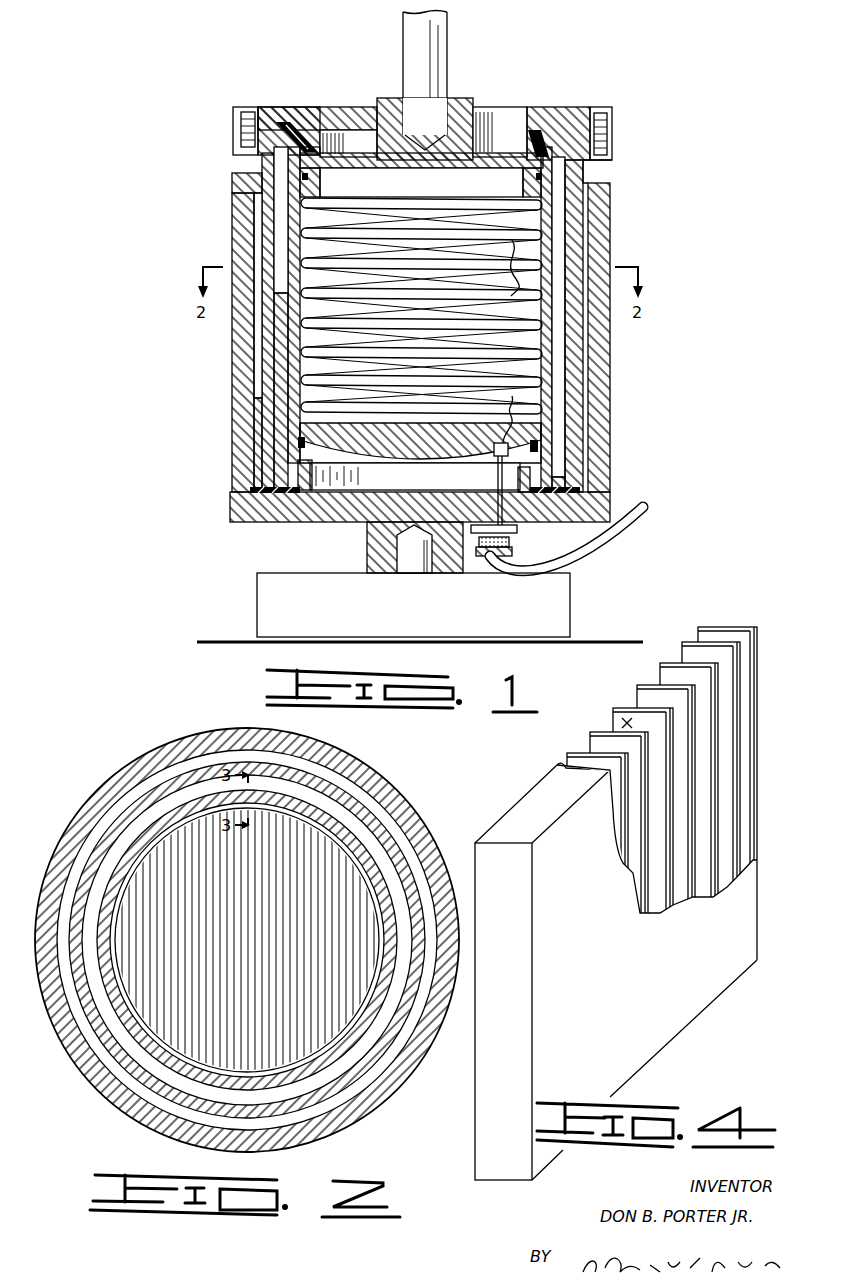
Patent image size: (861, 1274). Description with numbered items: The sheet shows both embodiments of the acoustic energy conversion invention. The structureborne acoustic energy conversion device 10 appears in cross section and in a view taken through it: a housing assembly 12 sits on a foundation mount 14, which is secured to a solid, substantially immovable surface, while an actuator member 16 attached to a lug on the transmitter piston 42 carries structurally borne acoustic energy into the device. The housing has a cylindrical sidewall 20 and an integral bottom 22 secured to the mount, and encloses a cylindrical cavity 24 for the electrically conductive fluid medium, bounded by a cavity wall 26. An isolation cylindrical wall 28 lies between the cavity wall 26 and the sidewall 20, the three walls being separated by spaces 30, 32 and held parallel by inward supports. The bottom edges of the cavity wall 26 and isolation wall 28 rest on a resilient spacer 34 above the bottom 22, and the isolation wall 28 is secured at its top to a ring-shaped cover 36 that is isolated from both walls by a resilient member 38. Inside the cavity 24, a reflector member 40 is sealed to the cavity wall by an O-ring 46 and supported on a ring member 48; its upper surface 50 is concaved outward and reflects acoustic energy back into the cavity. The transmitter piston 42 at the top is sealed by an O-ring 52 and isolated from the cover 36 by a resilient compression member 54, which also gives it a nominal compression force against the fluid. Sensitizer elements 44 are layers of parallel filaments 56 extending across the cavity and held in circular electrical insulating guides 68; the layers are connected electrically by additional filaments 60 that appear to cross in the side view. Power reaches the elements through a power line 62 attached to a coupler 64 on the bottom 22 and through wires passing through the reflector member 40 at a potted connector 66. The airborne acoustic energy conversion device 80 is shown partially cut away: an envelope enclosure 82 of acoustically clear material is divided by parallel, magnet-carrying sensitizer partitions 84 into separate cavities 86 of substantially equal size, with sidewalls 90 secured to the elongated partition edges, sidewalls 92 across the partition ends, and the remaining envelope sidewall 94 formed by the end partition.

In FIG. 1, the structureborne acoustic energy conversion device 10 is at (152, 100).
In FIG. 1, the housing assembly 12 is at (460, 120).
In FIG. 1, the foundation mount 14 is at (578, 600).
In FIG. 1, the actuator member 16 is at (448, 34).
In FIG. 1, the cylindrical sidewall 20 is at (602, 352).
In FIG. 2, the cylindrical sidewall 20 is at (398, 801).
In FIG. 1, the bottom 22 is at (328, 518).
In FIG. 1, the cylindrical cavity 24 is at (553, 168).
In FIG. 2, the cylindrical cavity 24 is at (256, 927).
In FIG. 1, the cylindrical cavity wall 26 is at (558, 187).
In FIG. 2, the cylindrical cavity wall 26 is at (332, 808).
In FIG. 1, the isolation cylindrical wall 28 is at (575, 204).
In FIG. 2, the isolation cylindrical wall 28 is at (394, 841).
In FIG. 1, the space 30 is at (277, 208).
In FIG. 2, the space 30 is at (118, 1039).
In FIG. 1, the space 32 is at (260, 230).
In FIG. 2, the space 32 is at (86, 1036).
In FIG. 1, the resilient spacer 34 is at (252, 488).
In FIG. 1, the cover 36 is at (268, 106).
In FIG. 1, the resilient member 38 is at (282, 120).
In FIG. 1, the reflector member 40 is at (336, 448).
In FIG. 1, the transmitter piston 42 is at (505, 135).
In FIG. 1, the sensitizer elements 44 is at (350, 204).
In FIG. 1, the O-ring 46 is at (540, 446).
In FIG. 1, the ring member 48 is at (414, 476).
In FIG. 1, the upper surface 50 is at (398, 453).
In FIG. 1, the O-ring 52 is at (303, 176).
In FIG. 1, the resilient compression member 54 is at (312, 150).
In FIG. 1, the filaments 56 is at (400, 227).
In FIG. 2, the filaments 56 is at (257, 985).
In FIG. 1, the additional filaments 60 is at (514, 274).
In FIG. 1, the power line 62 is at (632, 540).
In FIG. 1, the coupler 64 is at (510, 542).
In FIG. 1, the potted connector 66 is at (510, 452).
In FIG. 2, the electrical insulating guide 68 is at (123, 894).
In FIG. 4, the airborne acoustic energy conversion device 80 is at (766, 611).
In FIG. 4, the envelope enclosure 82 is at (646, 971).
In FIG. 4, the sensitizer partitions 84 is at (688, 840).
In FIG. 4, the cavities 86 is at (624, 721).
In FIG. 4, the sidewalls 90 is at (687, 1000).
In FIG. 4, the sidewalls 92 is at (531, 798).
In FIG. 4, the envelope sidewall 94 is at (748, 648).